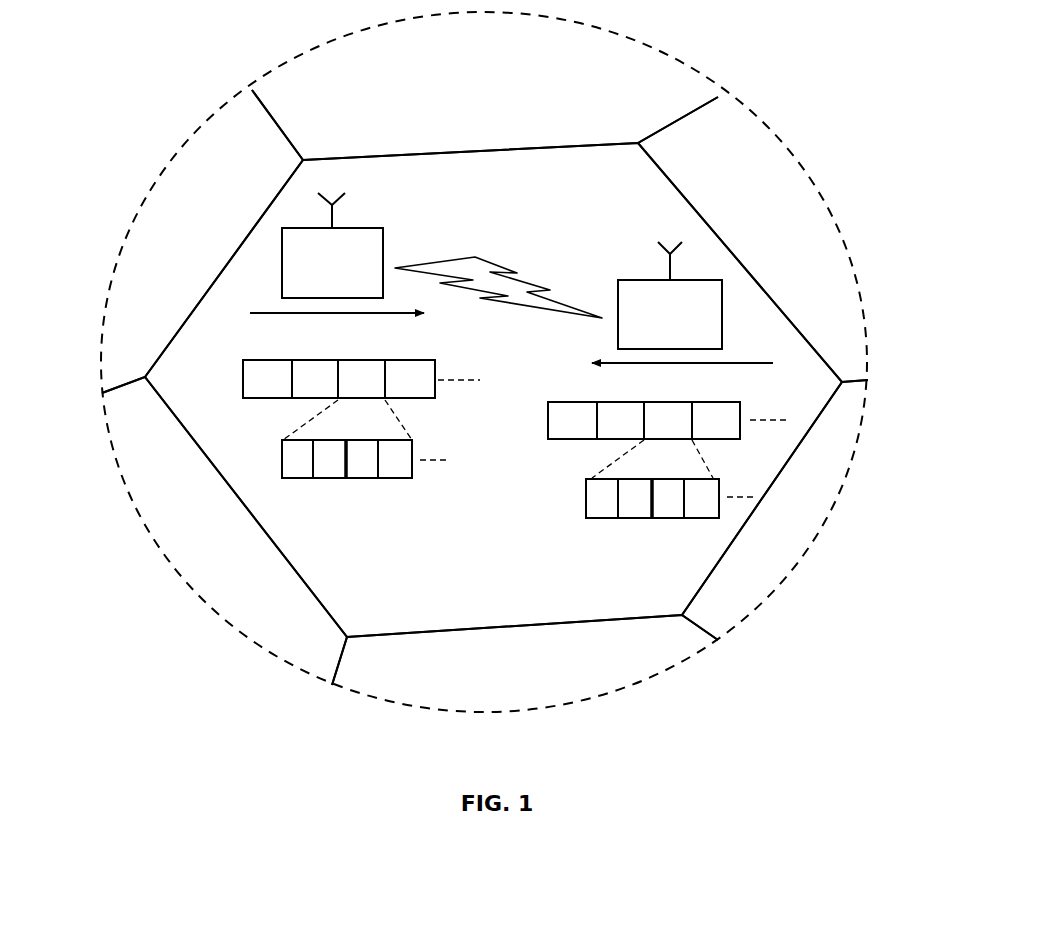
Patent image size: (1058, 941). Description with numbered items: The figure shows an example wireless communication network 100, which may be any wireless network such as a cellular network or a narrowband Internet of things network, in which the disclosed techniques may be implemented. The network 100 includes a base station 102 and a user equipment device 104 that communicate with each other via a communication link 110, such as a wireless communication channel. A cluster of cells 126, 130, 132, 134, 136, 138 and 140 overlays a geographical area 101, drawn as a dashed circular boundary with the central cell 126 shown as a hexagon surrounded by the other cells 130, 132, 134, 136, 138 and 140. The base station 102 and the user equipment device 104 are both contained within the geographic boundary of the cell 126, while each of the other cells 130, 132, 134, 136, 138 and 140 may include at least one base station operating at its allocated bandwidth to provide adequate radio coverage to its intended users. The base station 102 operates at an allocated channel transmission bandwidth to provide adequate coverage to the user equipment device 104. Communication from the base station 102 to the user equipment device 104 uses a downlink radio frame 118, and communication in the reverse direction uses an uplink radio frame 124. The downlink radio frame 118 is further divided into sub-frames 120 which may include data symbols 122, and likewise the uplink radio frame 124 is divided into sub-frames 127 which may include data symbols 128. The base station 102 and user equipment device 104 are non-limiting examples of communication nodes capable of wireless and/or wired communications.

The wireless communication network 100 is at (890, 129).
The geographical area 101 is at (120, 248).
The base station 102 is at (314, 289).
The user equipment device 104 is at (652, 339).
The communication link 110 is at (487, 260).
The downlink radio frame 118 is at (250, 383).
The sub-frame 120 is at (283, 470).
The data symbol 122 is at (365, 478).
The uplink radio frame 124 is at (555, 422).
The cell 126 is at (492, 602).
The sub-frame 127 is at (588, 508).
The data symbol 128 is at (670, 518).
The cell 130 is at (165, 248).
The cell 132 is at (469, 103).
The cell 134 is at (757, 242).
The cell 136 is at (772, 539).
The cell 138 is at (505, 677).
The cell 140 is at (187, 549).